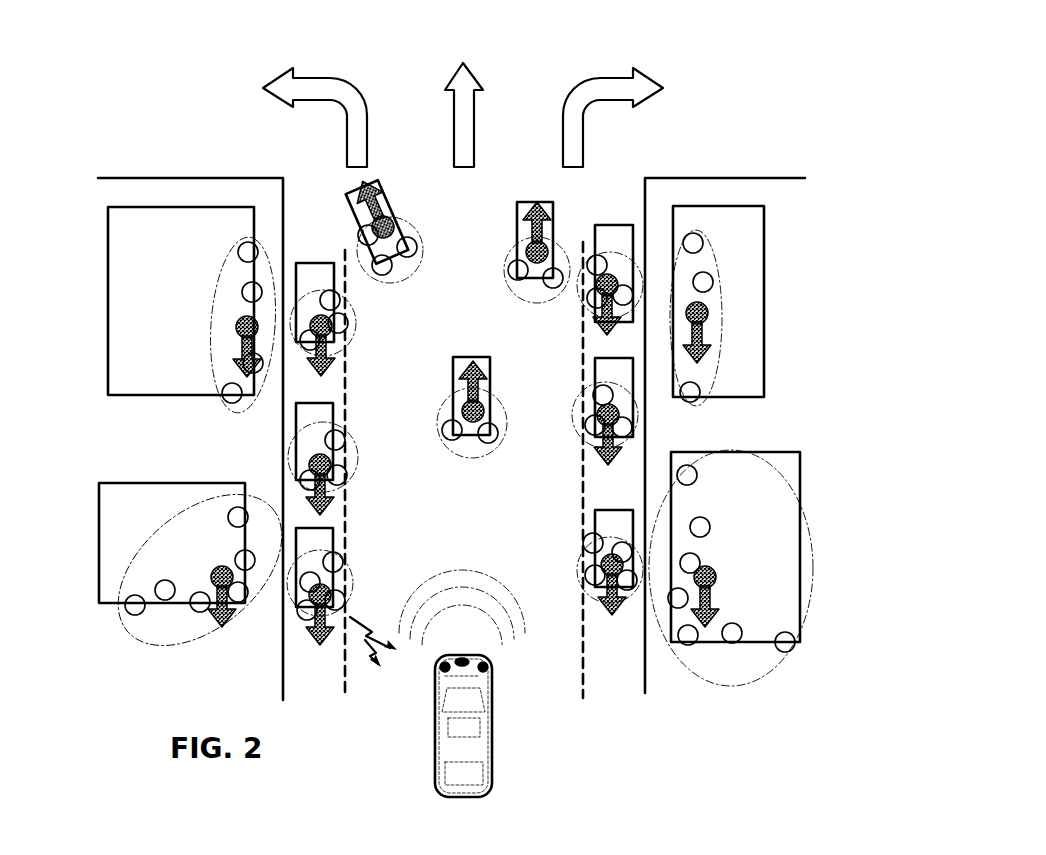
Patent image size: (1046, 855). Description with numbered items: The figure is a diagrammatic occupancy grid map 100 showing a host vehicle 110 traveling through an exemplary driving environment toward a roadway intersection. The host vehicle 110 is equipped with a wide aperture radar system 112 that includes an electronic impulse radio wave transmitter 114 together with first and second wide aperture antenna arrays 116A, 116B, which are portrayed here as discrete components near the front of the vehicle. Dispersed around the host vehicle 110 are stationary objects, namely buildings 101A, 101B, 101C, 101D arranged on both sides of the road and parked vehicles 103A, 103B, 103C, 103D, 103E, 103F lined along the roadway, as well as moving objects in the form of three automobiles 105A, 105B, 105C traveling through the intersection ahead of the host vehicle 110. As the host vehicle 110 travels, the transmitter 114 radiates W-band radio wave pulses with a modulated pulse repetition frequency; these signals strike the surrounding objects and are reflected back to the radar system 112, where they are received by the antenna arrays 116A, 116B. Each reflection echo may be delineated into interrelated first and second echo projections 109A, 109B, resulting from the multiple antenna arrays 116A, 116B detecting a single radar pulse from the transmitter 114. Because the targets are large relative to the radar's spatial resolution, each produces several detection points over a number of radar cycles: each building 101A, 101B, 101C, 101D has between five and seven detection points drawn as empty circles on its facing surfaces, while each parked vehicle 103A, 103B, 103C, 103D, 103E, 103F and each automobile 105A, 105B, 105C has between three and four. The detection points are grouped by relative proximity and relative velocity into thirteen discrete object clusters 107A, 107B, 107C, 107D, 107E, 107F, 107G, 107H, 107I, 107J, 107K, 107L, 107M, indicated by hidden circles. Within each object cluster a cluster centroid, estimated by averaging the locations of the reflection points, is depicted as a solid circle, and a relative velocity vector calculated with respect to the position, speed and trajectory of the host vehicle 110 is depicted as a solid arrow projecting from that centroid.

The occupancy grid map 100 is at (173, 53).
The building 101A is at (108, 226).
The building 101B is at (99, 488).
The building 101C is at (764, 217).
The building 101D is at (800, 460).
The parked vehicle 103A is at (340, 280).
The parked vehicle 103B is at (343, 413).
The parked vehicle 103C is at (336, 530).
The parked vehicle 103D is at (608, 223).
The parked vehicle 103E is at (597, 363).
The parked vehicle 103F is at (593, 515).
The automobile 105A is at (403, 197).
The automobile 105B is at (453, 370).
The automobile 105C is at (512, 203).
The object cluster 107A is at (213, 322).
The object cluster 107B is at (128, 573).
The object cluster 107C is at (717, 320).
The object cluster 107D is at (783, 497).
The object cluster 107E is at (338, 330).
The object cluster 107F is at (338, 473).
The object cluster 107G is at (307, 627).
The object cluster 107H is at (593, 303).
The object cluster 107I is at (597, 445).
The object cluster 107J is at (593, 565).
The object cluster 107K is at (417, 236).
The object cluster 107L is at (462, 412).
The object cluster 107M is at (566, 250).
The first echo projection 109A is at (352, 652).
The second echo projection 109B is at (350, 618).
The host vehicle 110 is at (502, 805).
The wide aperture radar system 112 is at (480, 683).
The impulse radio wave transmitter 114 is at (470, 665).
The first wide aperture antenna array 116A is at (445, 665).
The second wide aperture antenna array 116B is at (493, 668).